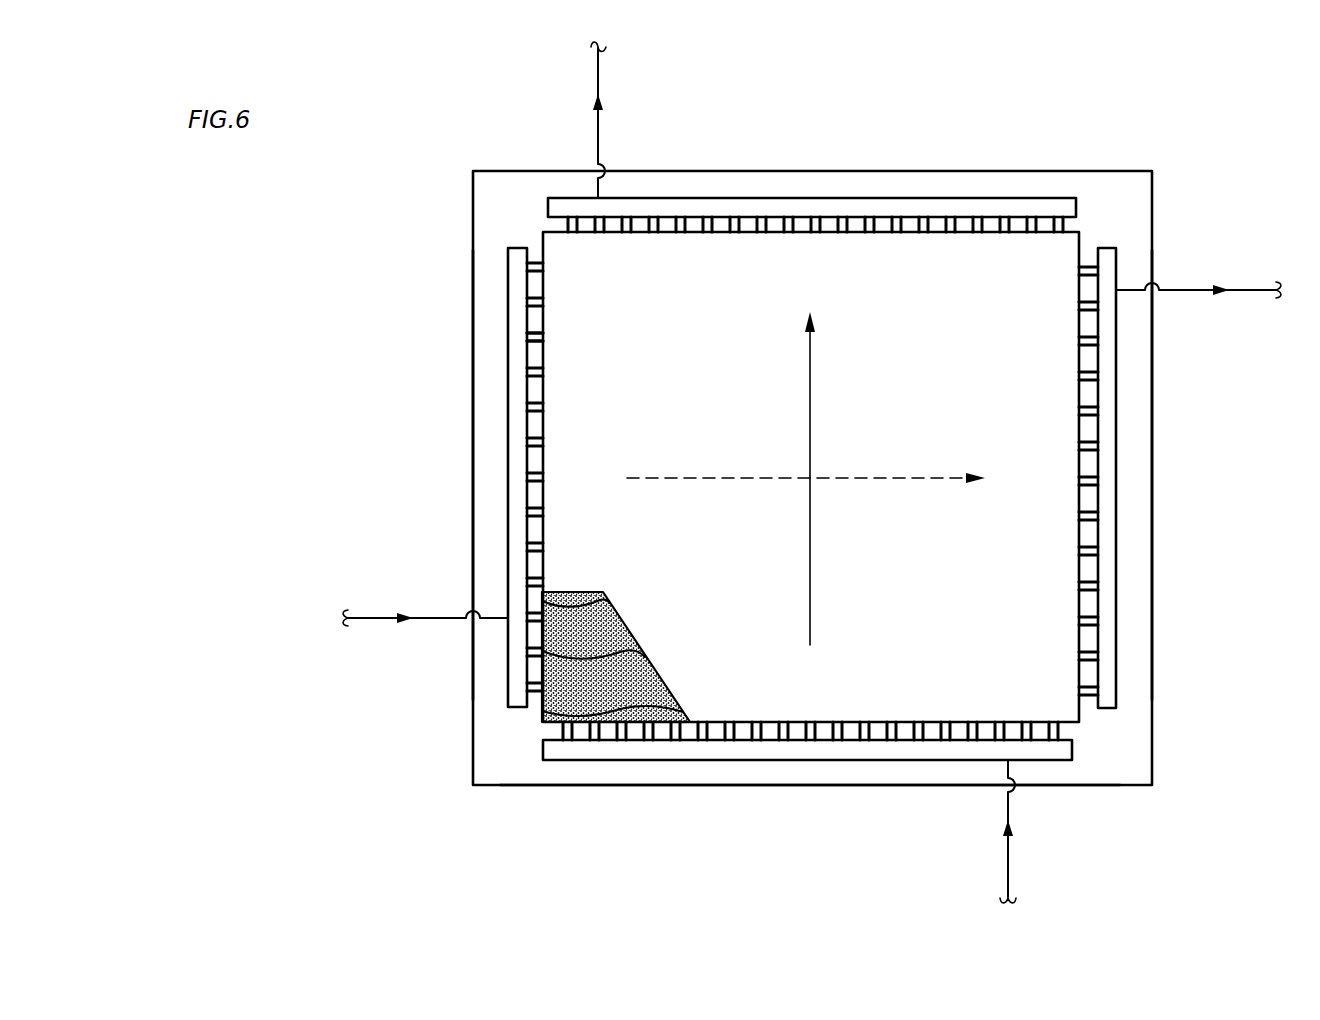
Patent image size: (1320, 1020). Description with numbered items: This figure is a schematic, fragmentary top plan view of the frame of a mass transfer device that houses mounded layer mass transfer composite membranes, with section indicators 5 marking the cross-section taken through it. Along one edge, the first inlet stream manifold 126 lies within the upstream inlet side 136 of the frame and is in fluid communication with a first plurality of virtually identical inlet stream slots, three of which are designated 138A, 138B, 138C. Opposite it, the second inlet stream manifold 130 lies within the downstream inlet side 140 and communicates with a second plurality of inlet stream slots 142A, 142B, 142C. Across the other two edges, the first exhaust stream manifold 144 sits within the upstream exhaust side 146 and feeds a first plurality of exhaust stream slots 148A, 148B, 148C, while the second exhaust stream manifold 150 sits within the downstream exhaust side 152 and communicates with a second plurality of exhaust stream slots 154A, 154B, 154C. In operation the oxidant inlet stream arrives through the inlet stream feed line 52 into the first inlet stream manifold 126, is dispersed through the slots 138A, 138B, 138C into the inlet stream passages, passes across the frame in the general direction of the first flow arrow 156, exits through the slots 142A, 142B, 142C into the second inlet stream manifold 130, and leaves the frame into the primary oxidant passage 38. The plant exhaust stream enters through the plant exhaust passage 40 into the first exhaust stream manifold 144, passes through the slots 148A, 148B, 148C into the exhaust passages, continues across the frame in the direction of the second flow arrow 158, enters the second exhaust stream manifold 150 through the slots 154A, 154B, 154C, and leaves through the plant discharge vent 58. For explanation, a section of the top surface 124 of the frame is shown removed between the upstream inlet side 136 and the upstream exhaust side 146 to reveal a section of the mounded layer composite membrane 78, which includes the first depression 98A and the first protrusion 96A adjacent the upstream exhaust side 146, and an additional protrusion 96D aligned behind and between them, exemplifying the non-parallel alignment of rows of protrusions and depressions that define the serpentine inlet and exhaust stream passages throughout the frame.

The section line of FIG. 5 is at (450, 509).
The primary oxidant passage 38 is at (1193, 290).
The plant exhaust passage 40 is at (1010, 858).
The inlet stream feed line 52 is at (370, 618).
The plant discharge vent 58 is at (598, 82).
The mounded layer mass transfer composite membrane 78 is at (569, 597).
The first protrusion 96A is at (660, 692).
The additional protrusion 96D is at (638, 599).
The first depression 98A is at (540, 674).
The top surface 124 is at (878, 461).
The first inlet stream manifold 126 is at (508, 278).
The second inlet stream manifold 130 is at (1100, 357).
The upstream inlet side 136 is at (487, 372).
The inlet stream slot 138A is at (542, 273).
The inlet stream slot 138B is at (540, 304).
The inlet stream slot 138C is at (540, 338).
The downstream inlet side 140 is at (1132, 440).
The inlet stream slot 142A is at (1080, 270).
The inlet stream slot 142B is at (1080, 304).
The inlet stream slot 142C is at (1080, 339).
The first exhaust stream manifold 144 is at (878, 748).
The upstream exhaust side 146 is at (770, 773).
The exhaust stream slot 148A is at (1052, 722).
The exhaust stream slot 148B is at (1024, 722).
The exhaust stream slot 148C is at (998, 722).
The second exhaust stream manifold 150 is at (1040, 205).
The downstream exhaust side 152 is at (877, 183).
The exhaust stream slot 154A is at (1054, 233).
The exhaust stream slot 154B is at (1028, 233).
The exhaust stream slot 154C is at (1001, 233).
The first flow arrow 156 is at (777, 478).
The second flow arrow 158 is at (810, 595).